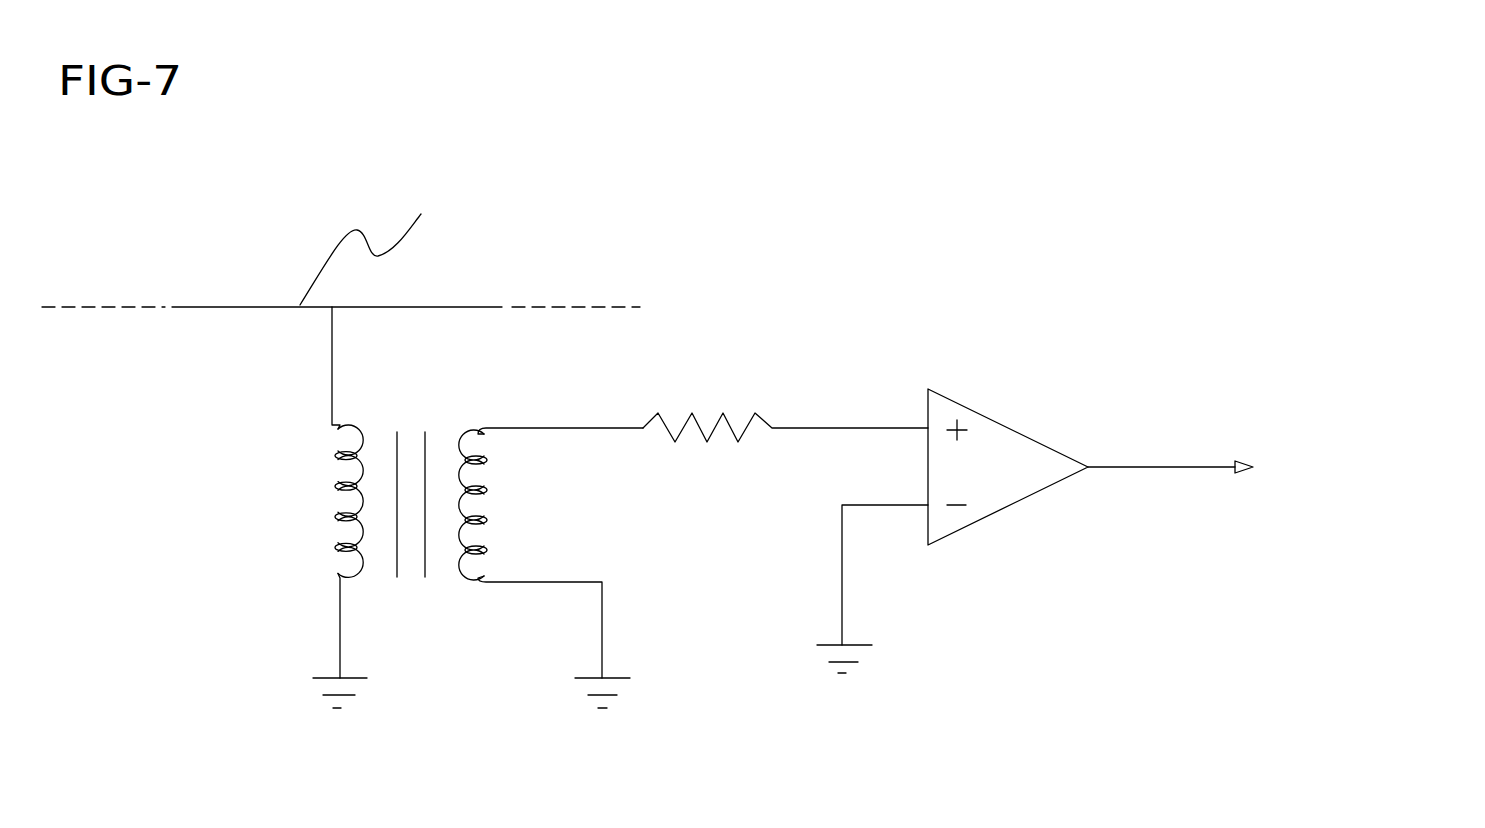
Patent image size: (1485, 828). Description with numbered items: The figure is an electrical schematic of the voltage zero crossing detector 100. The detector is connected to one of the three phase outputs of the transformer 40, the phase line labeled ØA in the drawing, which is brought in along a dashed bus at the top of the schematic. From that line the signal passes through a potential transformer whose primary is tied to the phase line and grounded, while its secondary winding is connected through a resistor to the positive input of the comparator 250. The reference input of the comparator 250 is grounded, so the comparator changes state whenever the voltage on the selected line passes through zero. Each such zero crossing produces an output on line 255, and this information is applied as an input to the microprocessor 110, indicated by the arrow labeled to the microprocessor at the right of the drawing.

The transformer 40 is at (341, 244).
The voltage zero crossing detector 100 is at (903, 280).
The microprocessor 110 is at (1335, 444).
The comparator 250 is at (1008, 428).
The output line 255 is at (1135, 470).